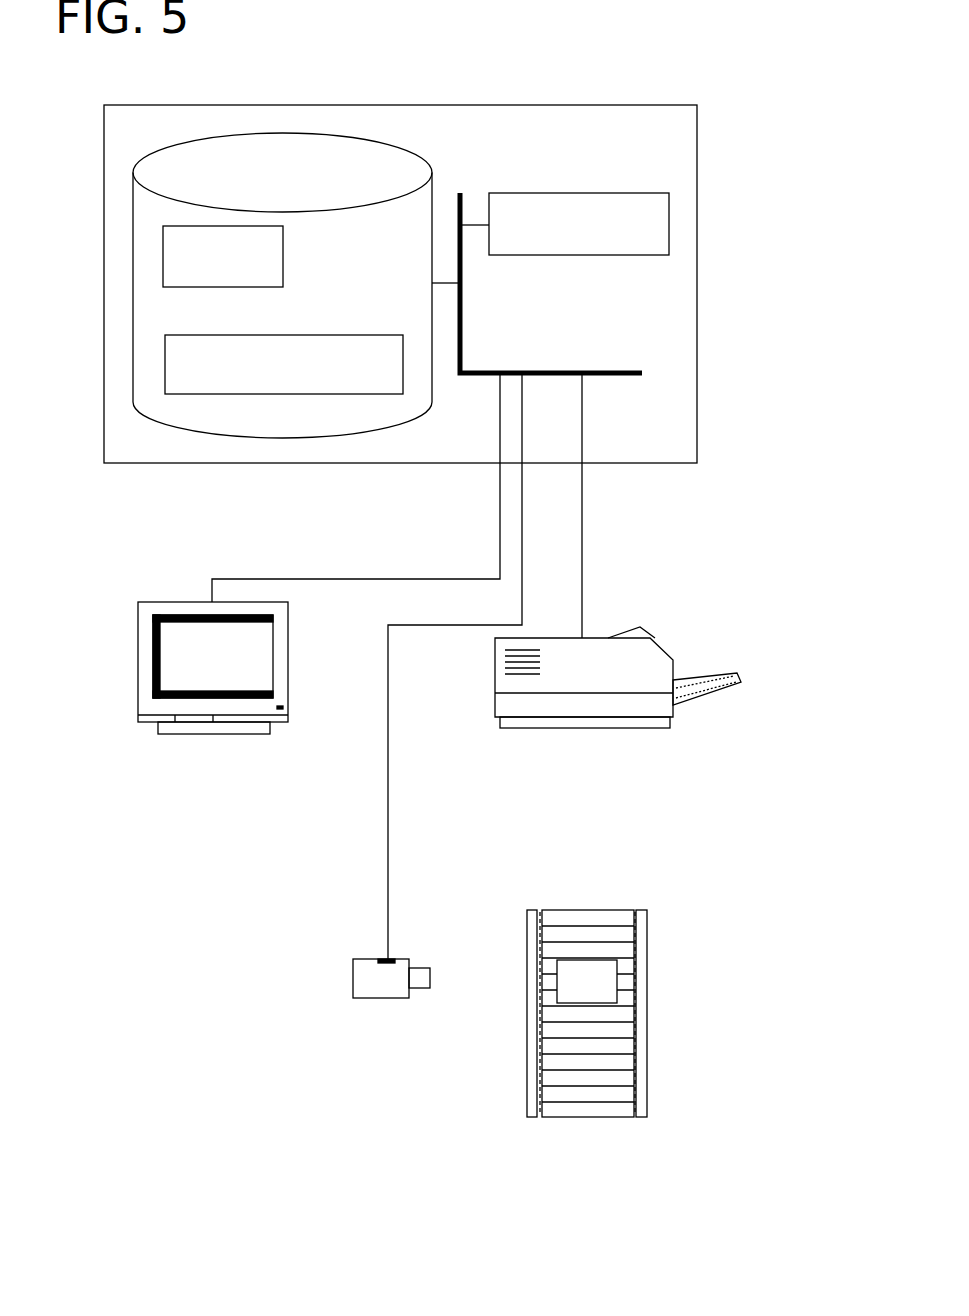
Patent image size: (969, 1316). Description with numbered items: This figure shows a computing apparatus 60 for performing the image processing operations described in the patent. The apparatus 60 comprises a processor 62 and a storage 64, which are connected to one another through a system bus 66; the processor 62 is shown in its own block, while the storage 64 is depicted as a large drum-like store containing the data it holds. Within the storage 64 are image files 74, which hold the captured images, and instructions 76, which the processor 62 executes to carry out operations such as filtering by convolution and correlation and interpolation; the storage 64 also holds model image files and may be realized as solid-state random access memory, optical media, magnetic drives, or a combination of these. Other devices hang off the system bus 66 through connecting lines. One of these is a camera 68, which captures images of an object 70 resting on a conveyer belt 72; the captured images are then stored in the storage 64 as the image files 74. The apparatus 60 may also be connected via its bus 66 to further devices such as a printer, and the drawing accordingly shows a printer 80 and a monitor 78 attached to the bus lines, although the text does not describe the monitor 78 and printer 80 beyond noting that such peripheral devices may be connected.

The computing apparatus 60 is at (680, 132).
The processor 62 is at (564, 189).
The storage 64 is at (302, 281).
The system bus 66 is at (570, 283).
The camera 68 is at (353, 970).
The object 70 is at (587, 981).
The conveyer belt 72 is at (647, 1056).
The image files 74 is at (273, 251).
The instructions 76 is at (284, 328).
The monitor 78 is at (138, 613).
The printer 80 is at (635, 694).